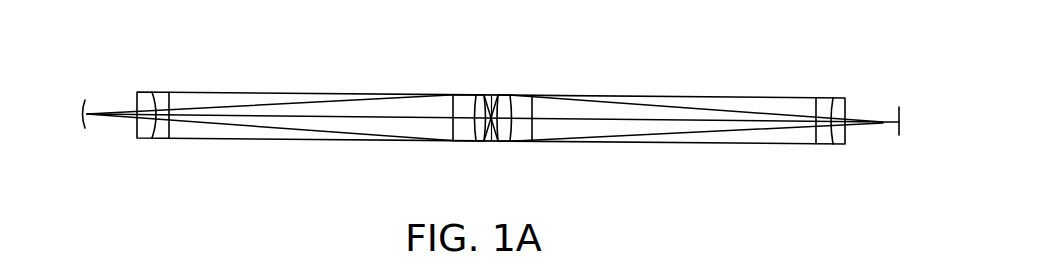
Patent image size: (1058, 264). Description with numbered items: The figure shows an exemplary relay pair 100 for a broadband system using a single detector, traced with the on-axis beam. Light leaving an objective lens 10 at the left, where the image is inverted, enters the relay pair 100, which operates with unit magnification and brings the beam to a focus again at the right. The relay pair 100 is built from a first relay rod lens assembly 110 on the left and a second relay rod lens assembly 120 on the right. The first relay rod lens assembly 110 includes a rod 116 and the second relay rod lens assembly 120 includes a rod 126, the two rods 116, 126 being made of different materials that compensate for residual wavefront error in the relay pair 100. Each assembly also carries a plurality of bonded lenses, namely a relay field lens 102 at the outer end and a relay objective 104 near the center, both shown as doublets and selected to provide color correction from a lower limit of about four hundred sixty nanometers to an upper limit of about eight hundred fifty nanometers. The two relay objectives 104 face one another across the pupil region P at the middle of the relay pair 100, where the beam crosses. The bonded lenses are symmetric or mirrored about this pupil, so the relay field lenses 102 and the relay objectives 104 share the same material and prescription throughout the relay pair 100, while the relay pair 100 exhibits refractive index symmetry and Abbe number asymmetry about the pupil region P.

The objective lens 10 is at (84, 109).
The relay pair 100 is at (724, 56).
The relay field lens 102 is at (170, 87).
The relay objective 104 is at (485, 90).
The pupil region P is at (493, 93).
The first relay rod lens assembly 110 is at (490, 151).
The rod 116 is at (260, 84).
The second relay rod lens assembly 120 is at (845, 156).
The rod 126 is at (649, 88).